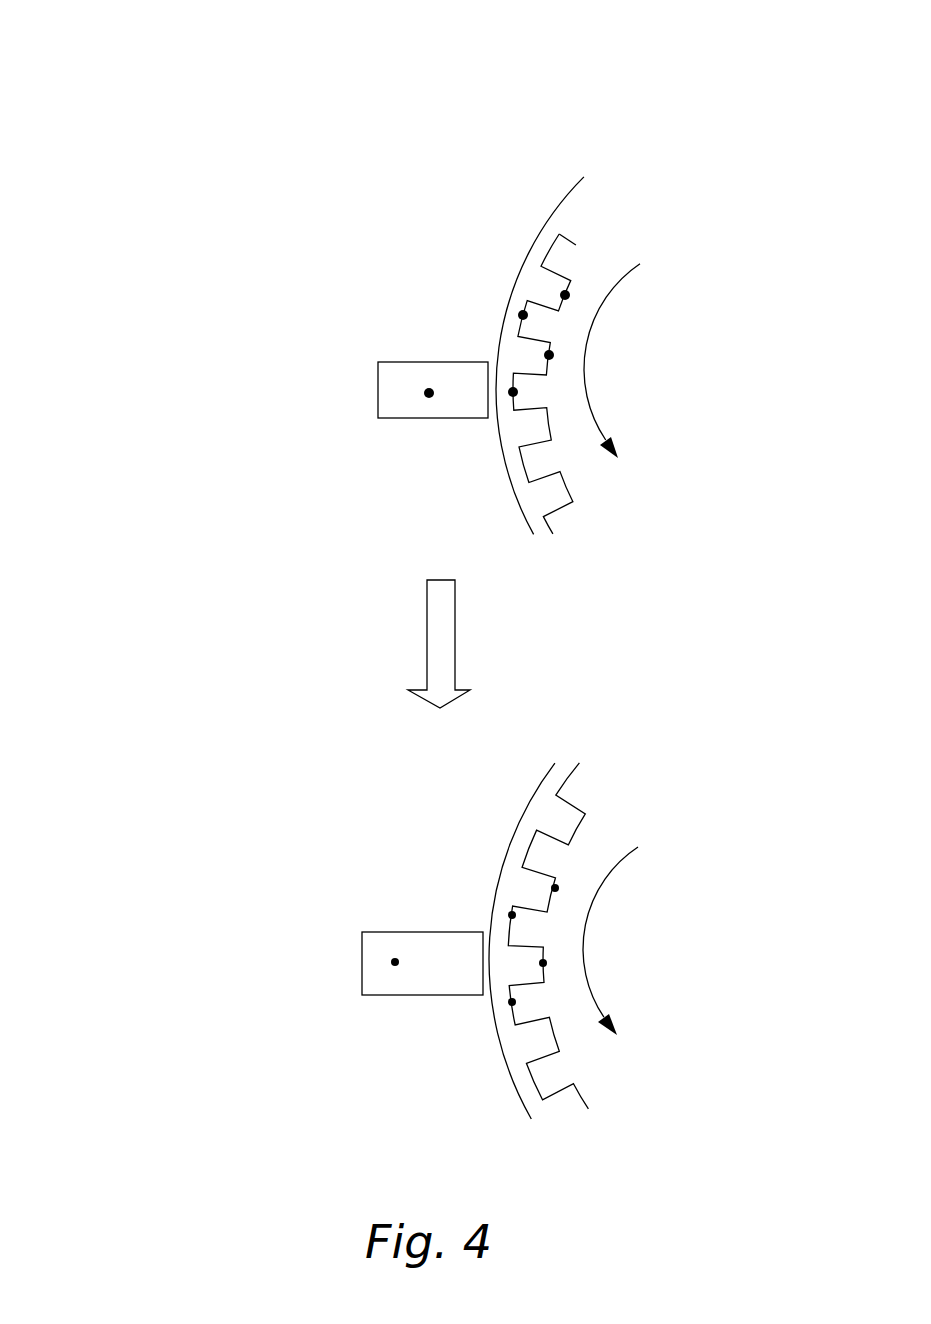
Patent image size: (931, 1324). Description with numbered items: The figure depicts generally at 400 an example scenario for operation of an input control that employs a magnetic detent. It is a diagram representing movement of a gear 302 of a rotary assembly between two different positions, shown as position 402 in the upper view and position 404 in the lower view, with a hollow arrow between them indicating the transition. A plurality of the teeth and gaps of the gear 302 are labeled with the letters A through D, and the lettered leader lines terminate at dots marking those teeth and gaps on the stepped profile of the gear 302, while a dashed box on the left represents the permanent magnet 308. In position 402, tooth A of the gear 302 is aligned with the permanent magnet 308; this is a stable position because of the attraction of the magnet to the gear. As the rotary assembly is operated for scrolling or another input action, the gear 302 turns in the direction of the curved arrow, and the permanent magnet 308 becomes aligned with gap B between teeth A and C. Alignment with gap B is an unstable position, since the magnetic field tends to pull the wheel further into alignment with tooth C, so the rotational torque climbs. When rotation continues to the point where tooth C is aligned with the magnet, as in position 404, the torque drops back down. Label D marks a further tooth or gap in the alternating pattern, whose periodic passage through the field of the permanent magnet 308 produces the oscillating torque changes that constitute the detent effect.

The example scenario 400 is at (158, 60).
The position 402 is at (222, 268).
The position 404 is at (222, 793).
The gear 302 is at (573, 250).
The permanent magnet 308 is at (429, 393).
The tooth A is at (513, 392).
The gap B is at (549, 355).
The tooth C is at (523, 315).
The tooth or gap D is at (565, 295).